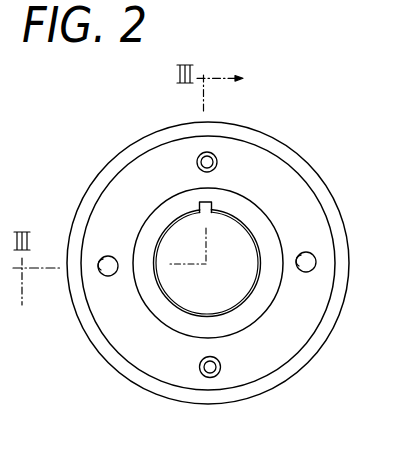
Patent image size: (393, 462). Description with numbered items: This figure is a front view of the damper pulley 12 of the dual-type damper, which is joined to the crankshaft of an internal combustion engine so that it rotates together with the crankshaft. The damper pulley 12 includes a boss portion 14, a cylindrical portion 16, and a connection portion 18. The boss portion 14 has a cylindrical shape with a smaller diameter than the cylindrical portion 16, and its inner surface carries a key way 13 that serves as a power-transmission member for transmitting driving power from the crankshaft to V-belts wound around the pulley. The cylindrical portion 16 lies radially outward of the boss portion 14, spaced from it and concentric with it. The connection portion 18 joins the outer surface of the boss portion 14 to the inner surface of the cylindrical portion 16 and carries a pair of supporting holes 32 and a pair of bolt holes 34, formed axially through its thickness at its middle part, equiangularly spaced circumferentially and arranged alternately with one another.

The damper pulley 12 is at (282, 126).
The key way 13 is at (205, 219).
The boss portion 14 is at (263, 245).
The cylindrical portion 16 is at (116, 163).
The connection portion 18 is at (140, 360).
The supporting holes 32 is at (105, 272).
The bolt holes 34 is at (200, 155).